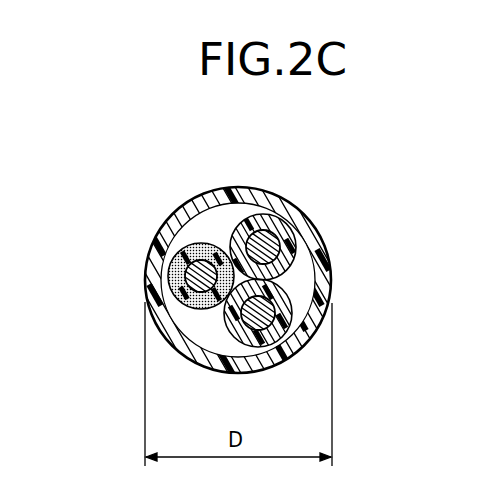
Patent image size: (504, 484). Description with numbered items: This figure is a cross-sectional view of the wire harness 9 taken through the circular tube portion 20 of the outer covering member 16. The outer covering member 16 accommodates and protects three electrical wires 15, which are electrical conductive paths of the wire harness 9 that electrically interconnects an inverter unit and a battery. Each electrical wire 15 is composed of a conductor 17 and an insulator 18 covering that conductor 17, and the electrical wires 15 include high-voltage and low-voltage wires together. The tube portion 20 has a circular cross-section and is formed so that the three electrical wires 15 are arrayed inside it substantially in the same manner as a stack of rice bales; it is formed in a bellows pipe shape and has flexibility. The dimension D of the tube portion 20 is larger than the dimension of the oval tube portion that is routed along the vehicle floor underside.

The wire harness 9 is at (379, 191).
The electrical wire 15 is at (248, 246).
The outer covering member 16 is at (323, 238).
The conductor 17 is at (170, 250).
The insulator 18 is at (160, 258).
The tube portion 20 is at (305, 217).